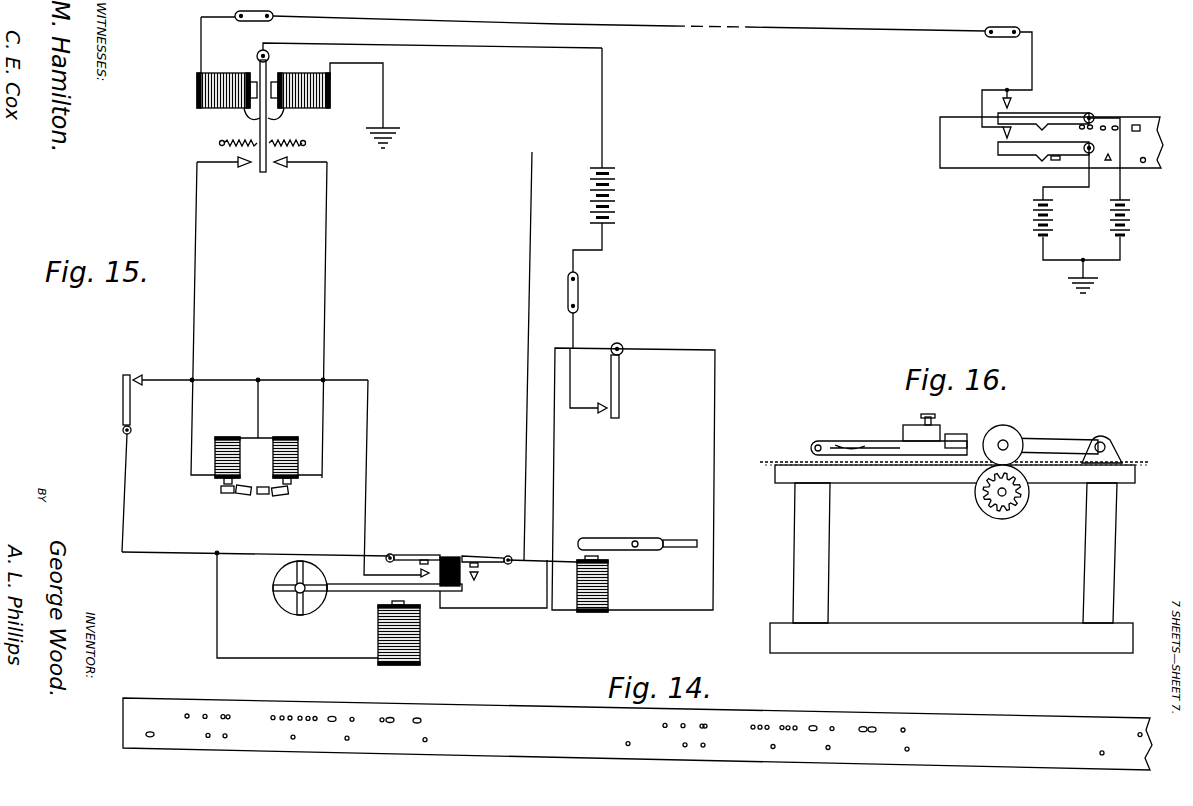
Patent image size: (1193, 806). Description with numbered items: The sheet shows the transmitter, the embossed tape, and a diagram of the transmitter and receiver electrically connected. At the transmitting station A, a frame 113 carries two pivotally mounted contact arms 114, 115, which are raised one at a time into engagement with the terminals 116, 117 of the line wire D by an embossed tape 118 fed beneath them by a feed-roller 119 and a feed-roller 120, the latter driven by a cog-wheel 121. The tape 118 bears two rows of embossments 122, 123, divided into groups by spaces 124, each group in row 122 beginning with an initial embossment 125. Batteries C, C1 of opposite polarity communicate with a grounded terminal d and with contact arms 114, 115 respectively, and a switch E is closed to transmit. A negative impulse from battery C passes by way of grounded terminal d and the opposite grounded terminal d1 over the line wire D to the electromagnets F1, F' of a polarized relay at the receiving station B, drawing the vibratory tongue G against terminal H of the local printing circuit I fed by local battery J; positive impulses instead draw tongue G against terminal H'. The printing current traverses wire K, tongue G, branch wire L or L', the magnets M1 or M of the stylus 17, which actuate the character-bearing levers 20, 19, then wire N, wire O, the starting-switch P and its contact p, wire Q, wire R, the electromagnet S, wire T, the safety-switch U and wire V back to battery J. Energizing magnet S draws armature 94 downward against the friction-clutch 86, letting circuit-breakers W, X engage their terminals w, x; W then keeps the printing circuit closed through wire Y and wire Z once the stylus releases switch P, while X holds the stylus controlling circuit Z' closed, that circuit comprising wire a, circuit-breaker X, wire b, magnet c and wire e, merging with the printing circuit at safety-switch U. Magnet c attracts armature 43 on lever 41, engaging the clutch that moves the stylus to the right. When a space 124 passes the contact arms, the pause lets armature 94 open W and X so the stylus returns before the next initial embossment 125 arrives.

In FIG. 15, the stylus 17 is at (256, 460).
In FIG. 15, the character-bearing lever 19 is at (283, 495).
In FIG. 15, the character-bearing lever 20 is at (234, 494).
In FIG. 15, the lever 41 is at (674, 540).
In FIG. 15, the armature 43 is at (612, 532).
In FIG. 15, the friction-clutch 86 is at (310, 593).
In FIG. 15, the armature 94 is at (445, 592).
In FIG. 16, the frame 113 is at (822, 612).
In FIG. 15, the contact arm 114 is at (1018, 157).
In FIG. 16, the contact arm 114 is at (912, 497).
In FIG. 15, the contact arm 115 is at (1043, 112).
In FIG. 15, the terminal 116 is at (1000, 134).
In FIG. 16, the terminal 116 is at (923, 418).
In FIG. 15, the terminal 117 is at (997, 100).
In FIG. 15, the embossed tape 118 is at (940, 155).
In FIG. 16, the embossed tape 118 is at (775, 462).
In FIG. 14, the embossed tape 118 is at (808, 714).
In FIG. 16, the feed-roller 119 is at (1010, 418).
In FIG. 16, the feed-roller 120 is at (995, 515).
In FIG. 16, the cog-wheel 121 is at (1015, 500).
In FIG. 15, the row of embossments 122 is at (1145, 163).
In FIG. 14, the row of embossments 122 is at (775, 750).
In FIG. 15, the row of embossments 123 is at (1139, 125).
In FIG. 14, the row of embossments 123 is at (873, 727).
In FIG. 14, the spaces 124 is at (637, 734).
In FIG. 15, the initial embossment 125 is at (1052, 162).
In FIG. 14, the initial embossment 125 is at (146, 744).
In FIG. 15, the transmitting station A is at (964, 219).
In FIG. 15, the receiving station B is at (437, 474).
In FIG. 15, the battery C is at (1030, 224).
In FIG. 15, the battery C1 is at (1135, 212).
In FIG. 15, the line wire D is at (593, 36).
In FIG. 15, the switch E is at (1007, 64).
In FIG. 15, the electromagnet of polarized relay F1 is at (197, 90).
In FIG. 15, the electromagnet of polarized relay F' is at (311, 96).
In FIG. 15, the vibratory tongue G is at (263, 172).
In FIG. 15, the terminal H is at (224, 177).
In FIG. 15, the terminal H' is at (300, 176).
In FIG. 15, the local printing circuit I is at (259, 272).
In FIG. 15, the local battery J is at (603, 214).
In FIG. 15, the wire K is at (604, 100).
In FIG. 15, the branch wire L is at (186, 318).
In FIG. 15, the branch wire L' is at (325, 320).
In FIG. 15, the magnet M is at (290, 437).
In FIG. 15, the magnet M1 is at (232, 437).
In FIG. 15, the wire N is at (258, 398).
In FIG. 15, the wire O is at (255, 372).
In FIG. 15, the starting-switch P is at (131, 389).
In FIG. 15, the contact p is at (134, 385).
In FIG. 15, the wire Q is at (124, 485).
In FIG. 15, the wire R is at (278, 661).
In FIG. 15, the electromagnet S is at (398, 667).
In FIG. 15, the wire T is at (545, 612).
In FIG. 15, the safety-switch U is at (608, 420).
In FIG. 15, the wire V is at (576, 328).
In FIG. 15, the circuit-breaker W is at (390, 554).
In FIG. 15, the terminal w is at (419, 575).
In FIG. 15, the circuit-breaker X is at (486, 556).
In FIG. 15, the terminal x is at (478, 578).
In FIG. 15, the wire Y is at (367, 456).
In FIG. 15, the wire Z is at (256, 548).
In FIG. 15, the stylus controlling circuit Z' is at (633, 479).
In FIG. 15, the wire a is at (530, 335).
In FIG. 15, the wire b is at (542, 549).
In FIG. 15, the electromagnet c is at (596, 613).
In FIG. 15, the grounded terminal d is at (1078, 278).
In FIG. 15, the grounded terminal d1 is at (383, 128).
In FIG. 15, the wire e is at (715, 487).